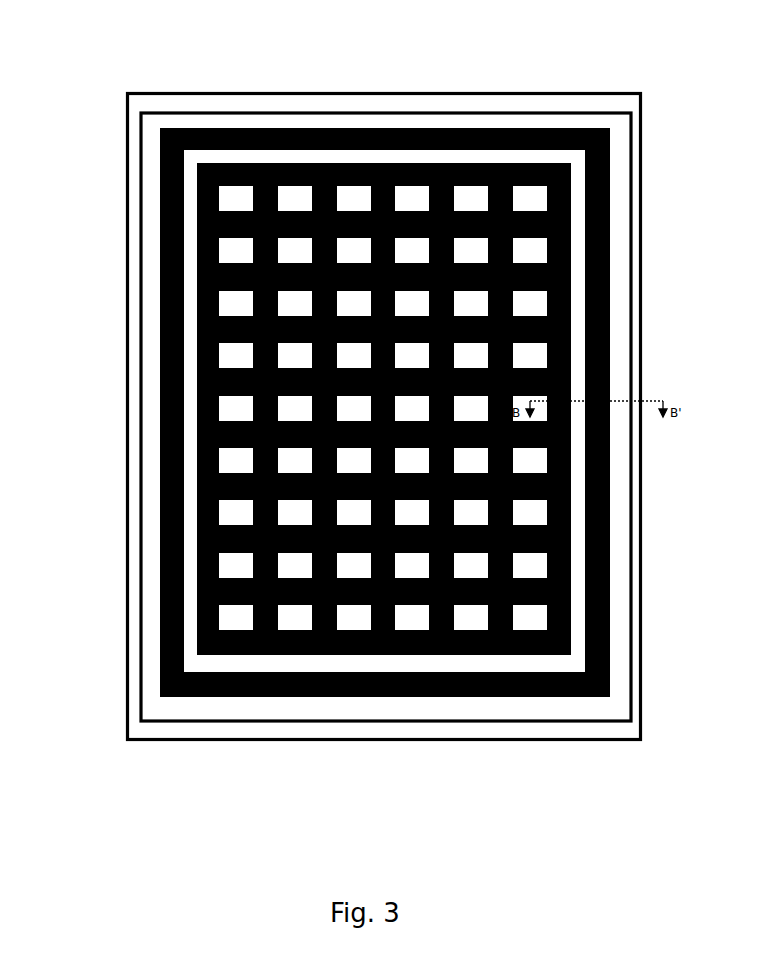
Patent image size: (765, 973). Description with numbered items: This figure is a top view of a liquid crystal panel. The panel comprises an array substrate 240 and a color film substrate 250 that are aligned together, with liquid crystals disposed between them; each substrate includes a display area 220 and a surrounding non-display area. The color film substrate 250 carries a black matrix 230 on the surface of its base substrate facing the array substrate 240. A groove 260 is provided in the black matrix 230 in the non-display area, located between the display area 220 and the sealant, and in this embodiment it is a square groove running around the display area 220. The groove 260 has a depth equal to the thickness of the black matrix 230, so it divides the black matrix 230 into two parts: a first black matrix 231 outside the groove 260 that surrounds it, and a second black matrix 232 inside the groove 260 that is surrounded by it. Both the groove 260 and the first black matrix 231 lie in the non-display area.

The display area 220 is at (232, 513).
The black matrix 230 is at (324, 497).
The first black matrix 231 is at (514, 695).
The second black matrix 232 is at (357, 653).
The array substrate 240 is at (310, 118).
The color film substrate 250 is at (520, 103).
The groove 260 is at (192, 326).